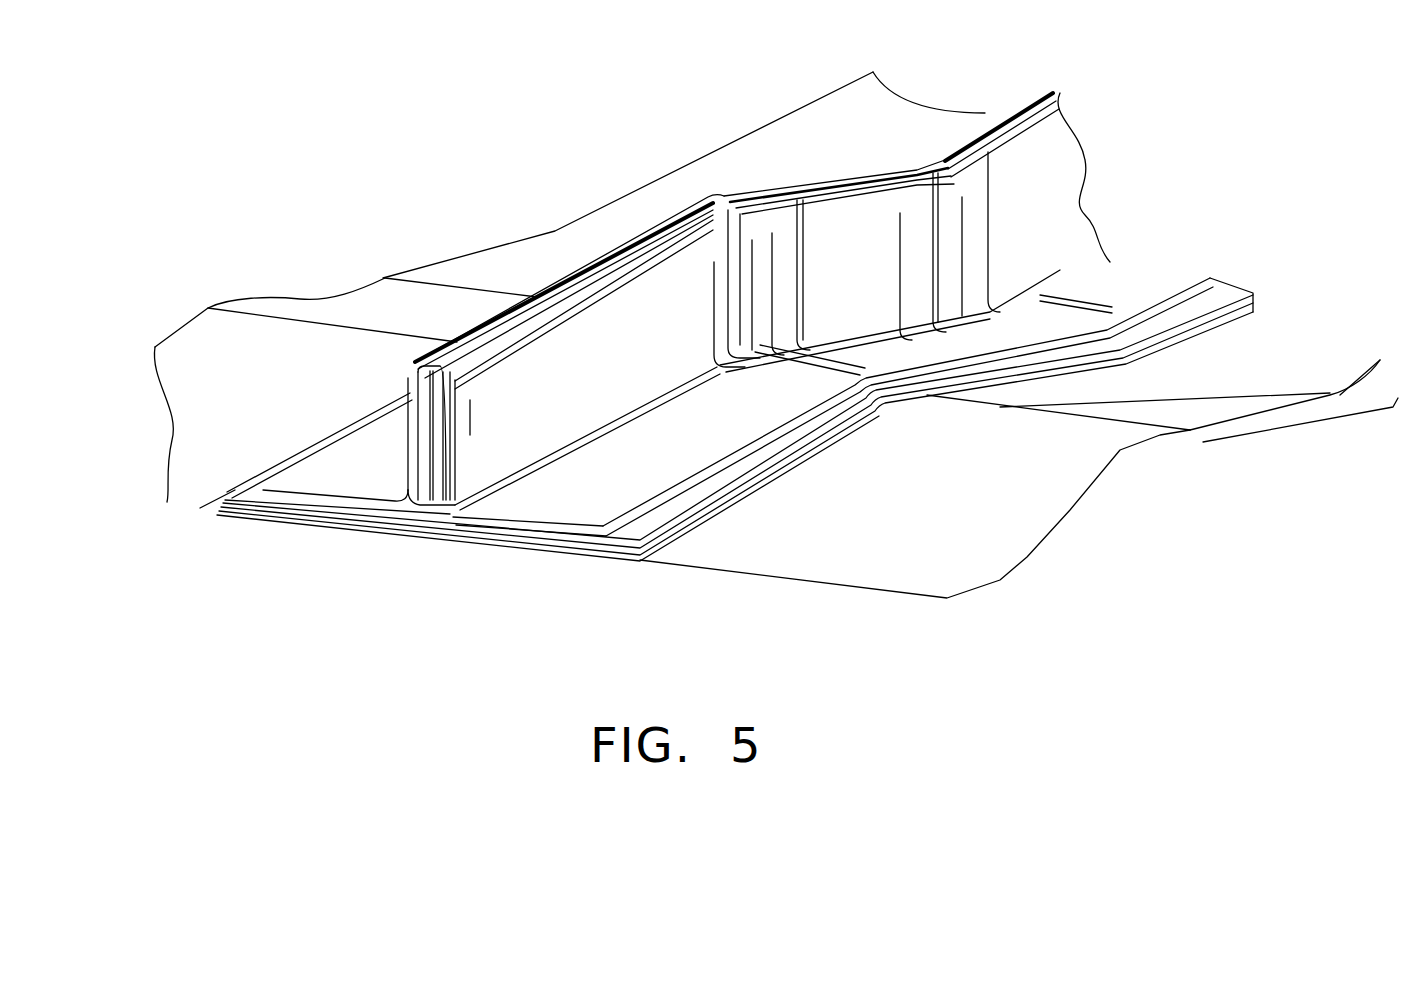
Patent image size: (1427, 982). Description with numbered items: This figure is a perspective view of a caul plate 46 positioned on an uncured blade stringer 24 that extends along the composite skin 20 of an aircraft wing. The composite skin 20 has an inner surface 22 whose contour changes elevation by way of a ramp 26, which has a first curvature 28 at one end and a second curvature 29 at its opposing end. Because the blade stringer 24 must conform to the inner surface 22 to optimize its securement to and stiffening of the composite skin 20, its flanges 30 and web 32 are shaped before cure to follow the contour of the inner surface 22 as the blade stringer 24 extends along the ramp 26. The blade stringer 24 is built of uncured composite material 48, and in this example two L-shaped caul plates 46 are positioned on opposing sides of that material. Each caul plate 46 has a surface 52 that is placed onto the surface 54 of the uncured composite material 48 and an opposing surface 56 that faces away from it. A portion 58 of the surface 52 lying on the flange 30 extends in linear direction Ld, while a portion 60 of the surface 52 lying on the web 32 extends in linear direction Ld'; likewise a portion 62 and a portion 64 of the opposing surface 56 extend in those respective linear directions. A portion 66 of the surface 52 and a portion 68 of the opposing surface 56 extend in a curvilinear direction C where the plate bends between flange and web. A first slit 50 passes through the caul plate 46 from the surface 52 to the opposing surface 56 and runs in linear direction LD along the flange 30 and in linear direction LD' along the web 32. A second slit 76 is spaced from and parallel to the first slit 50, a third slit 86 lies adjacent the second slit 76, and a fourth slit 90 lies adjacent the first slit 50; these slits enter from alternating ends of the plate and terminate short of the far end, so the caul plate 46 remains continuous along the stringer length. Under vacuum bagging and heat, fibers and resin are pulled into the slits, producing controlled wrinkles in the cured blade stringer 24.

The composite skin 20 is at (1258, 380).
The inner surface 22 is at (1230, 347).
The blade stringer 24 is at (400, 523).
The ramp 26 is at (1315, 428).
The first curvature 28 is at (1196, 440).
The second curvature 29 is at (1338, 385).
The flange 30 is at (240, 498).
The web 32 is at (592, 276).
The caul plate 46 is at (1002, 110).
The uncured composite material 48 is at (300, 518).
The first slit 50 is at (787, 250).
The surface 52 is at (296, 493).
The surface 54 is at (272, 470).
The opposing surface 56 is at (303, 463).
The portion 58 is at (570, 535).
The portion 60 is at (515, 355).
The portion 62 is at (612, 510).
The portion 64 is at (500, 420).
The portion 66 is at (428, 520).
The portion 68 is at (642, 420).
The second slit 76 is at (750, 232).
The third slit 86 is at (710, 265).
The fourth slit 90 is at (826, 225).